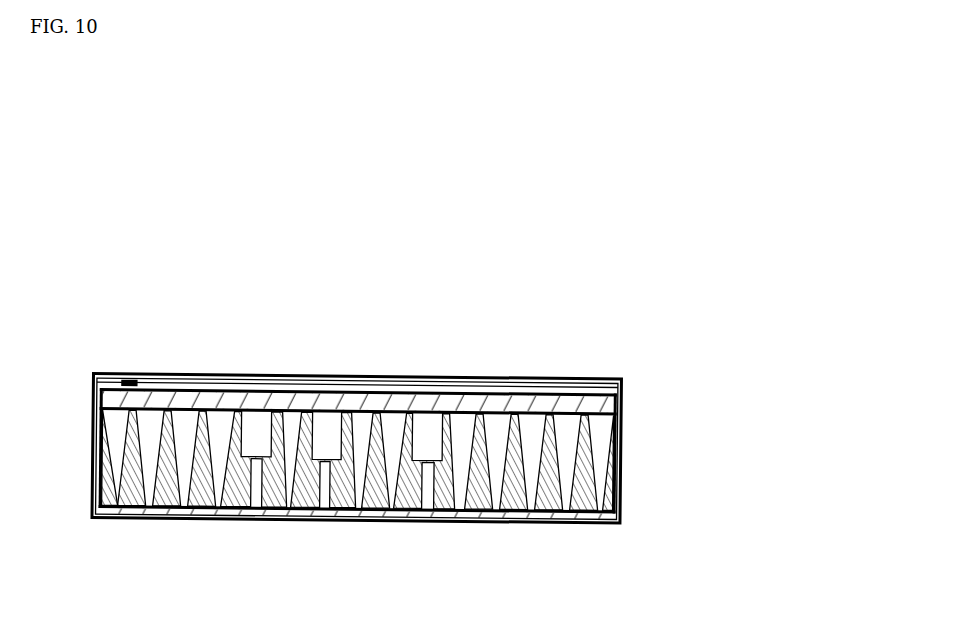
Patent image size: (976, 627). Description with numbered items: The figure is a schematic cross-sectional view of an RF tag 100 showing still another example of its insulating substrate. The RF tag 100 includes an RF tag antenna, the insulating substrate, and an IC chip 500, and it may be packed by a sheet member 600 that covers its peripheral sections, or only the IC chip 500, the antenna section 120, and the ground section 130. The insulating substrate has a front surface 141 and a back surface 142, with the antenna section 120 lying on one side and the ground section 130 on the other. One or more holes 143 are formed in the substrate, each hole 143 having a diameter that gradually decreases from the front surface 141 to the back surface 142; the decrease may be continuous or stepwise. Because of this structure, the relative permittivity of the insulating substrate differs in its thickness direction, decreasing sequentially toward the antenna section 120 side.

The RF tag 100 is at (630, 281).
The antenna section 120 is at (536, 404).
The ground section 130 is at (537, 509).
The front surface 141 is at (209, 413).
The back surface 142 is at (405, 492).
The hole 143 is at (237, 412).
The IC chip 500 is at (137, 381).
The sheet member 600 is at (443, 382).